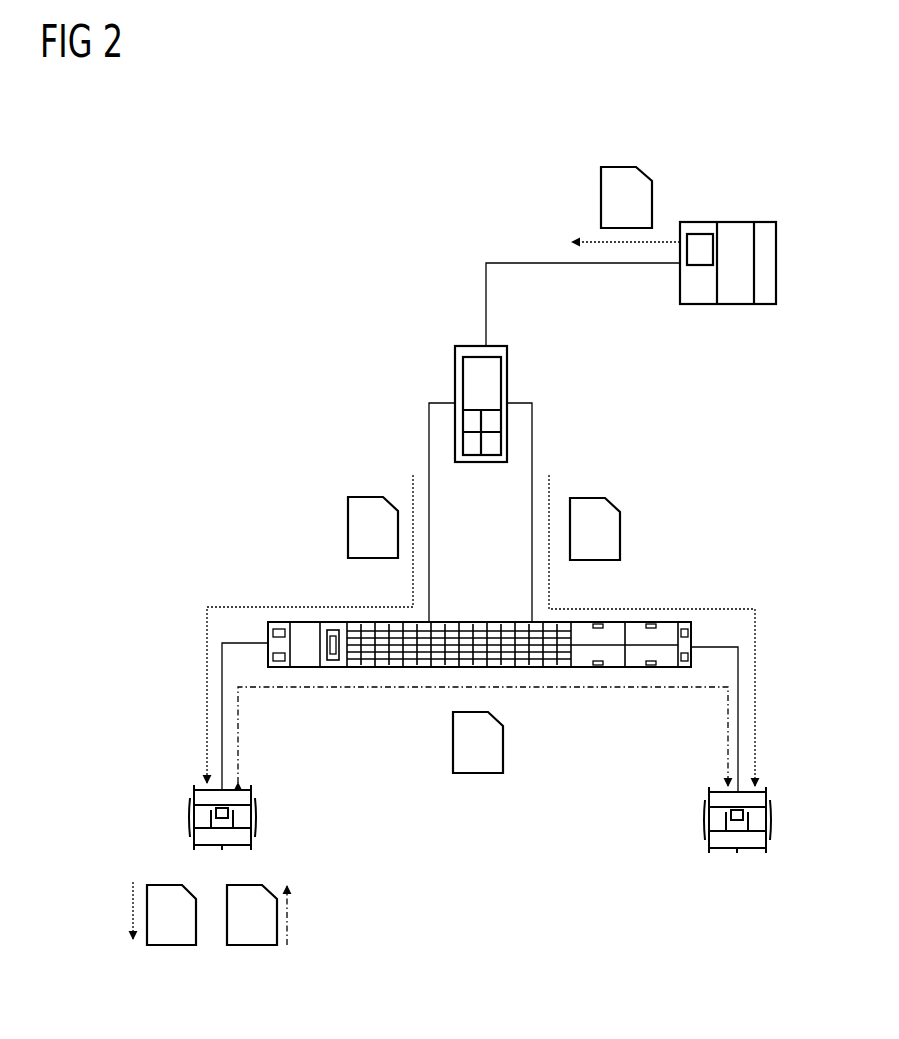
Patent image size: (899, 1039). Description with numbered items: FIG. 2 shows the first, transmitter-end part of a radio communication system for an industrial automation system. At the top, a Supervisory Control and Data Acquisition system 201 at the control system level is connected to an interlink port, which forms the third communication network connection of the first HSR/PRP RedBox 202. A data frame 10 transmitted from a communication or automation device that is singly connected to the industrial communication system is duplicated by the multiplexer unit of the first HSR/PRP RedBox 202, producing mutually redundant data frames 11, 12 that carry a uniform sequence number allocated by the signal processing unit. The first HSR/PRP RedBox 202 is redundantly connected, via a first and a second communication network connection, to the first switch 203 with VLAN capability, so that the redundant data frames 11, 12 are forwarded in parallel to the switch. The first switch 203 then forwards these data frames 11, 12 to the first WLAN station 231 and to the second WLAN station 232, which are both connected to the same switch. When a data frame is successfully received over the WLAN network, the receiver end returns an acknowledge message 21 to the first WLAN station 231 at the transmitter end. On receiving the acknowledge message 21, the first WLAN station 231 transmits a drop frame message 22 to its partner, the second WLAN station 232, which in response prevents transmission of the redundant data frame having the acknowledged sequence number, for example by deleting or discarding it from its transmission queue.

The data frame 10 is at (620, 165).
The redundant data frame 11 is at (363, 497).
The redundant data frame 12 is at (585, 498).
The acknowledge message 21 is at (245, 947).
The drop frame message 22 is at (480, 775).
The Supervisory Control and Data Acquisition system 201 is at (742, 222).
The first HSR/PRP RedBox 202 is at (507, 357).
The first switch with VLAN capability 203 is at (666, 622).
The first WLAN station 231 is at (255, 813).
The second WLAN station 232 is at (752, 852).